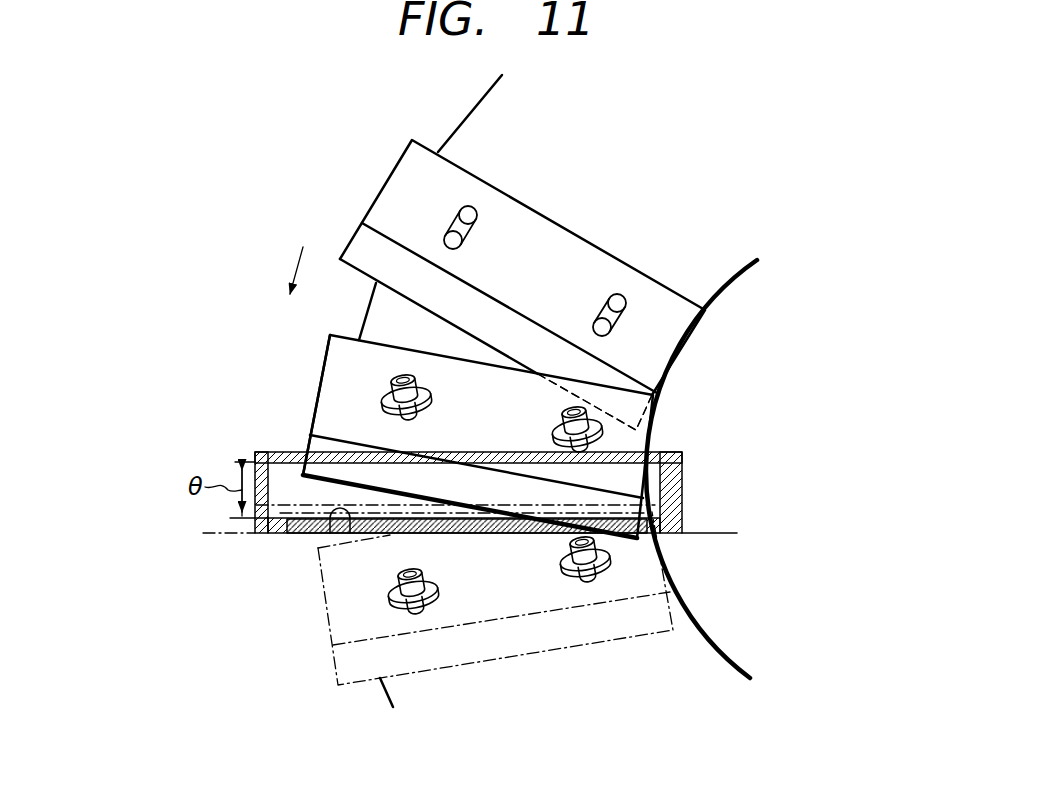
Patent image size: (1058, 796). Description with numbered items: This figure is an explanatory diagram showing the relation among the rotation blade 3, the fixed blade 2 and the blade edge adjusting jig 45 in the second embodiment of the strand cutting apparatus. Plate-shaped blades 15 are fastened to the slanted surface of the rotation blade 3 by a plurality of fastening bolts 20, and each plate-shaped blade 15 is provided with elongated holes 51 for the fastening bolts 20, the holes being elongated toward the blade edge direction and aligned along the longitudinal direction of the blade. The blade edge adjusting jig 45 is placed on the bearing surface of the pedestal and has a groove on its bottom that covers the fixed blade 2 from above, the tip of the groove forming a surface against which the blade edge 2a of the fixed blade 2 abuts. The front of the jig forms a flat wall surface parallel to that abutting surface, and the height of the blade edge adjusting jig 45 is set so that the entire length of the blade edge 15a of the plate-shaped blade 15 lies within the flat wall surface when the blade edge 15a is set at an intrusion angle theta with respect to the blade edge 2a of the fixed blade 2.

The fixed blade 2 is at (298, 534).
The blade edge 2a is at (317, 537).
The rotation blade 3 is at (482, 132).
The plate-shaped blade 15 is at (380, 212).
The blade edge 15a is at (306, 484).
The fastening bolt 20 is at (598, 403).
The blade edge adjusting jig 45 is at (663, 487).
The elongated hole 51 is at (484, 222).